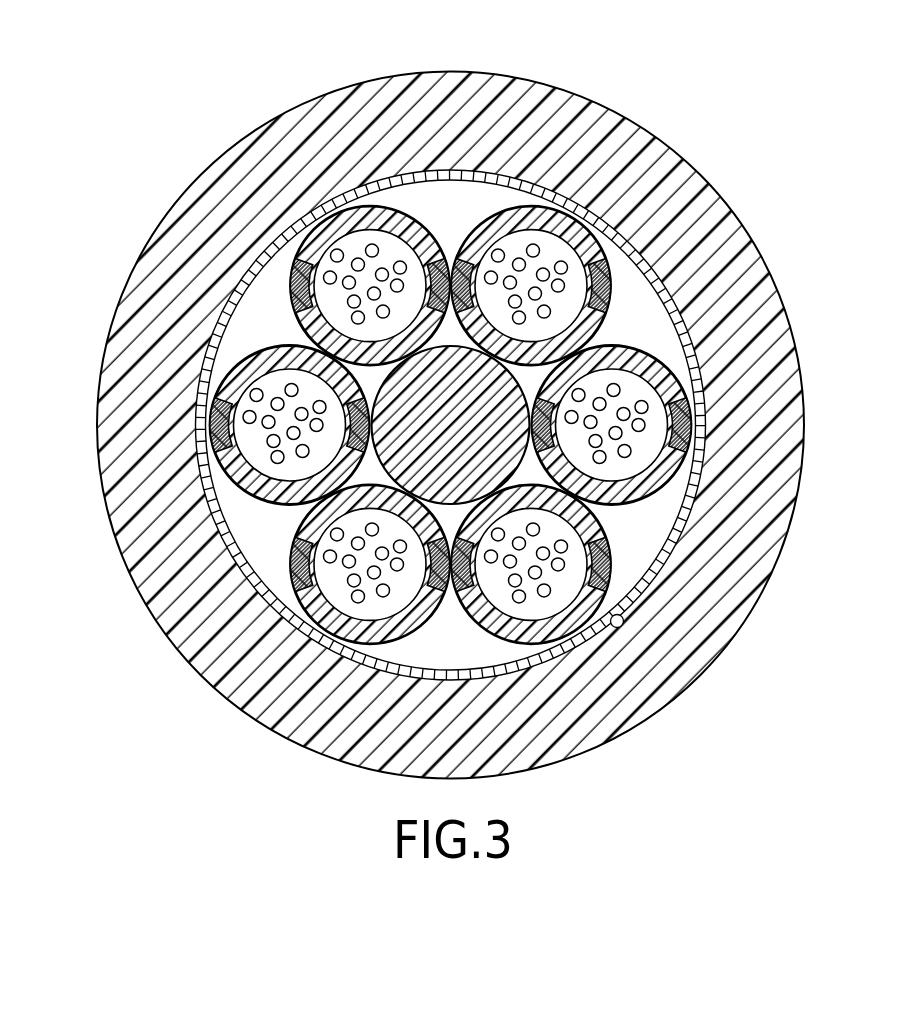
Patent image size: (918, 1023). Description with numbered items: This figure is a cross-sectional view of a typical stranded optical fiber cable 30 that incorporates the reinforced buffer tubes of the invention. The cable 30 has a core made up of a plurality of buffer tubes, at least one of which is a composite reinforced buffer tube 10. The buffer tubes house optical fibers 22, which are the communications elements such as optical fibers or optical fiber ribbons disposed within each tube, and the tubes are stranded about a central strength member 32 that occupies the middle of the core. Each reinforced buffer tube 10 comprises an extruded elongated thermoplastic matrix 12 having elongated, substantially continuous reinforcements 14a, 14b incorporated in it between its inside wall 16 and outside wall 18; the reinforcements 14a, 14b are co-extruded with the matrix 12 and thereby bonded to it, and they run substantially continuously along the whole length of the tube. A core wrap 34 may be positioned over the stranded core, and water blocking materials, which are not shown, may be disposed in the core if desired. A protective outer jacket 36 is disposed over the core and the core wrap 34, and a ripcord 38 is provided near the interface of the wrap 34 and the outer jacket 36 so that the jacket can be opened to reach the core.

The composite reinforced buffer tube 10 is at (470, 218).
The elongated thermoplastic matrix 12 is at (572, 227).
The reinforcement 14a is at (293, 277).
The reinforcement 14b is at (610, 280).
The inside wall 16 is at (600, 323).
The outside wall 18 is at (602, 245).
The communications elements 22 is at (560, 285).
The stranded optical fiber cable 30 is at (246, 70).
The central strength member 32 is at (390, 467).
The core wrap 34 is at (680, 522).
The protective outer jacket 36 is at (122, 360).
The ripcord 38 is at (622, 627).